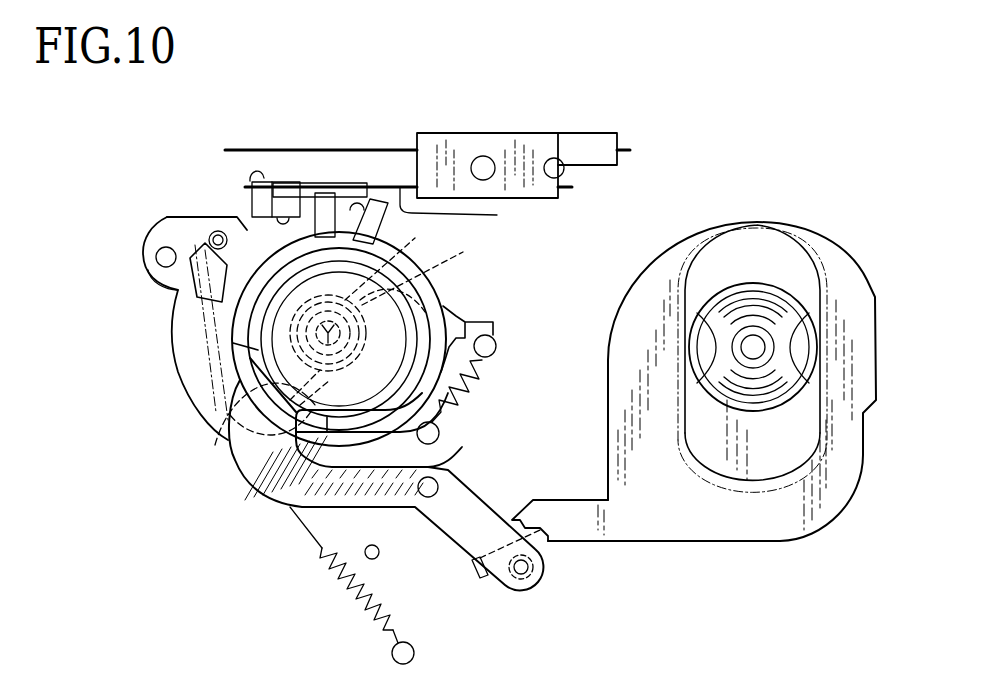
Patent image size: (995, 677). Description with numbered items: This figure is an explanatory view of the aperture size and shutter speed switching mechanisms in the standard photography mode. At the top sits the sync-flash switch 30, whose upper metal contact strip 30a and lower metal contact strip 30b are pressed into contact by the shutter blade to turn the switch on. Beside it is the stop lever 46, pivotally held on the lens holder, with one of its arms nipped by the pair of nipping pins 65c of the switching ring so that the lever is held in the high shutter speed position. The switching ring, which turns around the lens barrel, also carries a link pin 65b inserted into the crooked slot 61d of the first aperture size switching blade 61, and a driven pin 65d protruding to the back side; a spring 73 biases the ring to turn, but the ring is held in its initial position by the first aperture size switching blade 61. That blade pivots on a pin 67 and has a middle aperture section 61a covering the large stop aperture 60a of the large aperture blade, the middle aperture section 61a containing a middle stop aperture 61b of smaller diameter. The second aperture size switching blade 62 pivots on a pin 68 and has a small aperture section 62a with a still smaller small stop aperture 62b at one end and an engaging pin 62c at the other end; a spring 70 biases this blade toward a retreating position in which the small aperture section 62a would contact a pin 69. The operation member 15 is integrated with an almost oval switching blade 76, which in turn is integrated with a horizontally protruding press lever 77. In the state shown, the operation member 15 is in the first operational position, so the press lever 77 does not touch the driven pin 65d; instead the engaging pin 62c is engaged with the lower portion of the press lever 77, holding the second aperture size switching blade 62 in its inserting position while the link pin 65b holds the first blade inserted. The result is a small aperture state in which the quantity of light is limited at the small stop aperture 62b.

The operation member 15 is at (724, 290).
The sync-flash switch 30 is at (482, 132).
The upper metal contact strip 30a is at (401, 148).
The lower metal contact strip 30b is at (472, 208).
The stop lever 46 is at (310, 188).
The large stop aperture 60a is at (196, 405).
The first aperture size switching blade 61 is at (178, 372).
The middle aperture section 61a is at (398, 300).
The middle stop aperture 61b is at (355, 278).
The crooked slot 61d is at (152, 250).
The second aperture size switching blade 62 is at (235, 480).
The small aperture section 62a is at (443, 300).
The small stop aperture 62b is at (463, 252).
The engaging pin 62c is at (525, 575).
The link pin 65b is at (215, 237).
The nipping pins 65c is at (373, 203).
The driven pin 65d is at (497, 349).
The pin 67 is at (158, 275).
The pin 68 is at (437, 480).
The pin 69 is at (379, 552).
The spring 70 is at (335, 578).
The spring 73 is at (466, 396).
The switching blade 76 is at (710, 543).
The press lever 77 is at (480, 580).